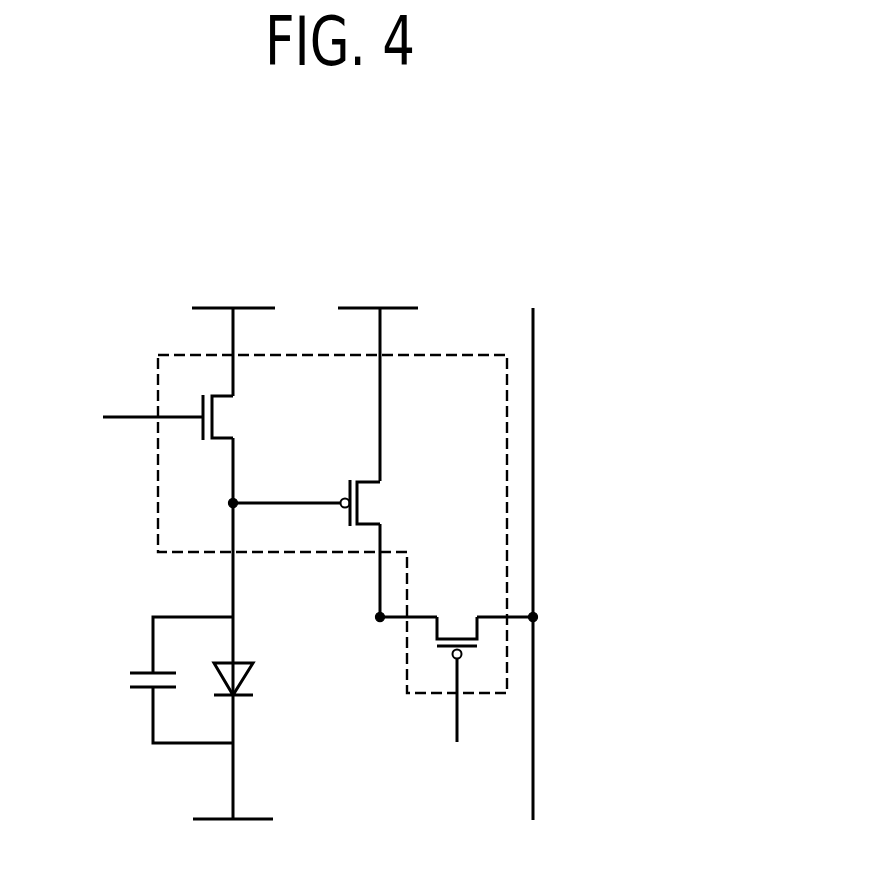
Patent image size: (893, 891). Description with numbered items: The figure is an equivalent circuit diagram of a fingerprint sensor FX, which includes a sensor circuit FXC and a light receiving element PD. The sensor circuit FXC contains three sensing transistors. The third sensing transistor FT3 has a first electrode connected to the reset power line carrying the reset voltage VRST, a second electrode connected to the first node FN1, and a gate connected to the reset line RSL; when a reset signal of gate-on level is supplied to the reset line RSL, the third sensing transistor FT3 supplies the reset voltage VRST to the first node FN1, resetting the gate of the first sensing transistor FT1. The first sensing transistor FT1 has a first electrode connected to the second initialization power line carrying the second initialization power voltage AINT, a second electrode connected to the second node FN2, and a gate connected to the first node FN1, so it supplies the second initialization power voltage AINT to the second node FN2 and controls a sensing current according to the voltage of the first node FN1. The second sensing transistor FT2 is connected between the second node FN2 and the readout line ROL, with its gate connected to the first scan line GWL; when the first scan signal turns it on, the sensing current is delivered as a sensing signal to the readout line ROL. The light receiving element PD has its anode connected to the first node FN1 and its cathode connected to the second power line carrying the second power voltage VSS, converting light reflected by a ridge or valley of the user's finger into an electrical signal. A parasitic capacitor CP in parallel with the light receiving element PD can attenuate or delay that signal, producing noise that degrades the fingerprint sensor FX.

The fingerprint sensor FX is at (512, 199).
The sensor circuit FXC is at (158, 493).
The reset voltage VRST is at (233, 329).
The second initialization power voltage AINT is at (378, 372).
The readout line ROL is at (533, 543).
The reset line RSL is at (124, 418).
The third sensing transistor FT3 is at (240, 418).
The first node FN1 is at (261, 527).
The first sensing transistor FT1 is at (380, 504).
The second node FN2 is at (430, 595).
The second sensing transistor FT2 is at (457, 618).
The first scan line GWL is at (457, 741).
The parasitic capacitor CP is at (165, 680).
The light receiving element PD is at (257, 677).
The second power voltage VSS is at (233, 742).